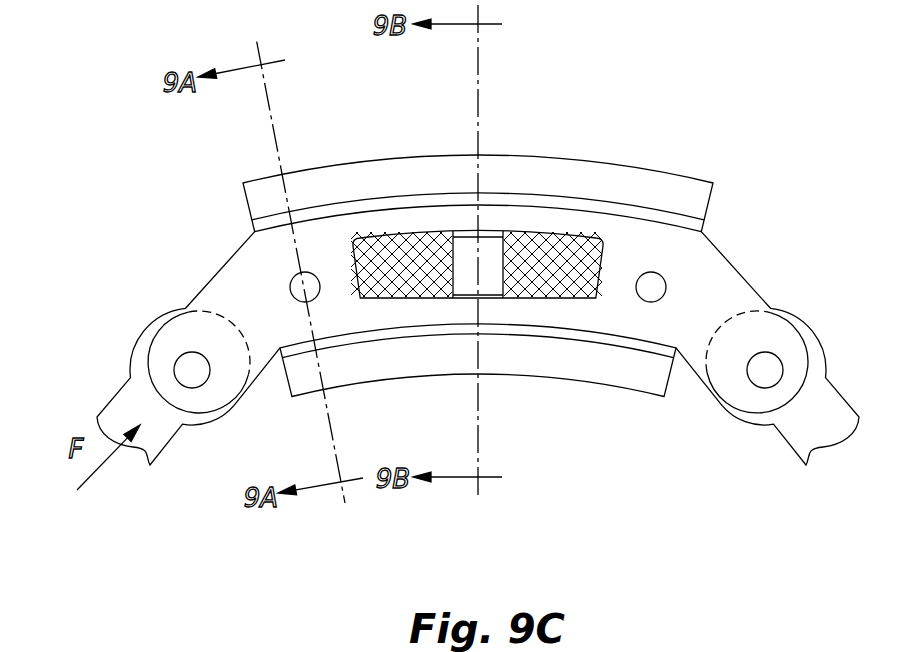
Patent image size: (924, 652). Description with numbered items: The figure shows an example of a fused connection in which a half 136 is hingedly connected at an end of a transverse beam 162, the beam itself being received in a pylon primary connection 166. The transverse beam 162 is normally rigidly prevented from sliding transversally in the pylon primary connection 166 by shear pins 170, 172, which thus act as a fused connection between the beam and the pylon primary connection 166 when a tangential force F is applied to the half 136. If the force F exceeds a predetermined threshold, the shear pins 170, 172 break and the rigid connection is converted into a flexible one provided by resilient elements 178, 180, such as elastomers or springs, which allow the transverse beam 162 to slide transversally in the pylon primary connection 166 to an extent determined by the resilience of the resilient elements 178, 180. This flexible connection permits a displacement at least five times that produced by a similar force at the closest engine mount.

The half 136 is at (132, 378).
The transverse beam 162 is at (712, 267).
The pylon primary connection 166 is at (618, 183).
The shear pin 170 is at (290, 287).
The shear pin 172 is at (652, 277).
The resilient element 178 is at (397, 257).
The resilient element 180 is at (540, 253).